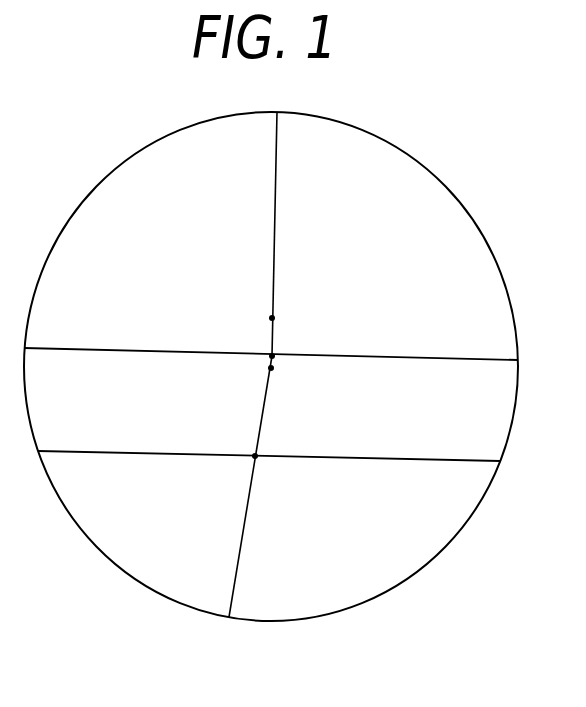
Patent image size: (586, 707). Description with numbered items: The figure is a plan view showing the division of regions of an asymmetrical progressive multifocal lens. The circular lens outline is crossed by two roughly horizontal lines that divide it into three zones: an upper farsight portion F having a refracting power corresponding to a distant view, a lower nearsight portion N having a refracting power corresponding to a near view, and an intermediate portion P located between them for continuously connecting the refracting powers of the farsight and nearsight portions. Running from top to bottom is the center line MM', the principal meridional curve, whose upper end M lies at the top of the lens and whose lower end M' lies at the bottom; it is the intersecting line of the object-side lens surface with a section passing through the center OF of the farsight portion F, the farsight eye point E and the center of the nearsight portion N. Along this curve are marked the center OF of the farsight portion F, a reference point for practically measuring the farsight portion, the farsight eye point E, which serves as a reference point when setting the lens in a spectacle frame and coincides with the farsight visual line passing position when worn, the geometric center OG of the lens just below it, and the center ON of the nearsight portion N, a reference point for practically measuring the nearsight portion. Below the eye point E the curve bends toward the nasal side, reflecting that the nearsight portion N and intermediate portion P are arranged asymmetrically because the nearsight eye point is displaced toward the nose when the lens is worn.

The upper end of principal meridional curve M is at (277, 217).
The lower end of principal meridional curve M' is at (242, 504).
The center of farsight portion OF is at (290, 309).
The farsight eye point E is at (282, 344).
The geometric center of the lens OG is at (291, 379).
The center of nearsight portion ON is at (273, 473).
The farsight portion F is at (445, 307).
The intermediate portion P is at (437, 419).
The nearsight portion N is at (422, 513).